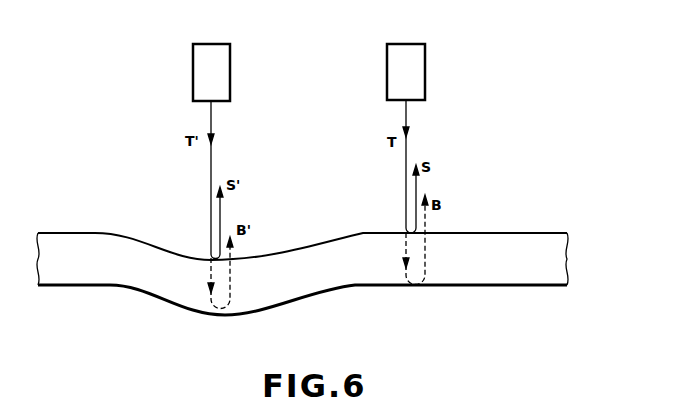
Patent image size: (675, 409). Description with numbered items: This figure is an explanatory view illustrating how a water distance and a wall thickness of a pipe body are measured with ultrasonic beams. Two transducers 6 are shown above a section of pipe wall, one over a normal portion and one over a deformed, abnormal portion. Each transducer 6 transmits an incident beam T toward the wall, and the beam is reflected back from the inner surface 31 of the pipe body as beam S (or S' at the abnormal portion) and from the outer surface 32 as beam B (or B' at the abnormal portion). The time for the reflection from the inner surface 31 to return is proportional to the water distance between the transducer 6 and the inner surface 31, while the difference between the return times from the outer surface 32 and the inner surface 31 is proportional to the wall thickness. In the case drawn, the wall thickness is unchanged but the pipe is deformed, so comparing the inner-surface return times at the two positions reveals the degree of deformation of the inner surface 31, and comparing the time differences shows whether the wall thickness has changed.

The transducer 6 is at (230, 72).
The inner surface of a pipe body 31 is at (312, 242).
The outer surface of the pipe body 32 is at (318, 293).